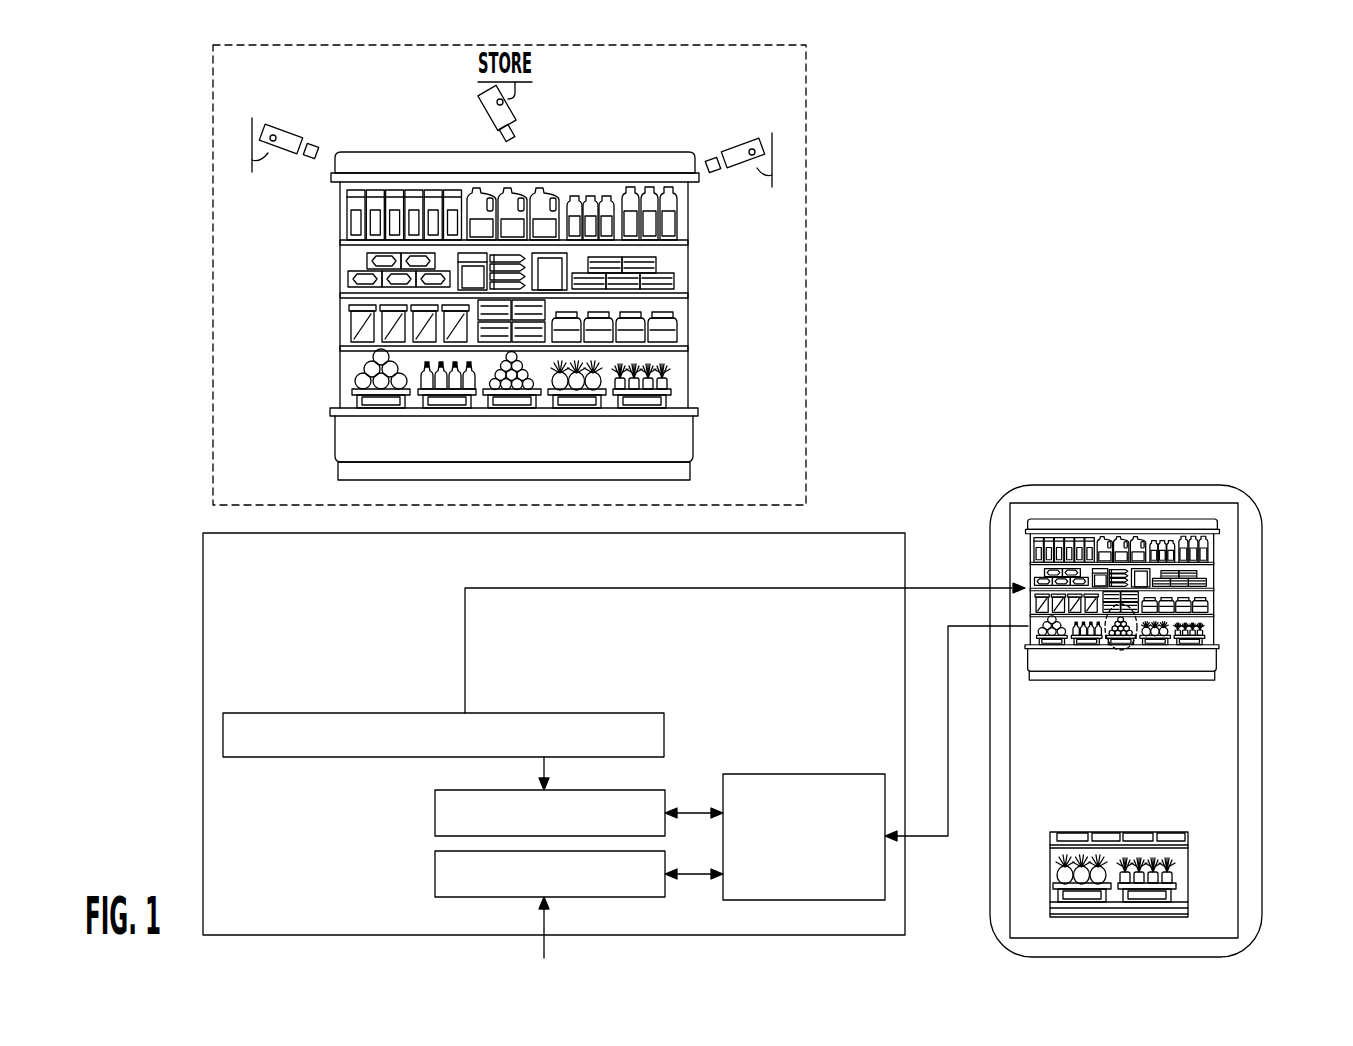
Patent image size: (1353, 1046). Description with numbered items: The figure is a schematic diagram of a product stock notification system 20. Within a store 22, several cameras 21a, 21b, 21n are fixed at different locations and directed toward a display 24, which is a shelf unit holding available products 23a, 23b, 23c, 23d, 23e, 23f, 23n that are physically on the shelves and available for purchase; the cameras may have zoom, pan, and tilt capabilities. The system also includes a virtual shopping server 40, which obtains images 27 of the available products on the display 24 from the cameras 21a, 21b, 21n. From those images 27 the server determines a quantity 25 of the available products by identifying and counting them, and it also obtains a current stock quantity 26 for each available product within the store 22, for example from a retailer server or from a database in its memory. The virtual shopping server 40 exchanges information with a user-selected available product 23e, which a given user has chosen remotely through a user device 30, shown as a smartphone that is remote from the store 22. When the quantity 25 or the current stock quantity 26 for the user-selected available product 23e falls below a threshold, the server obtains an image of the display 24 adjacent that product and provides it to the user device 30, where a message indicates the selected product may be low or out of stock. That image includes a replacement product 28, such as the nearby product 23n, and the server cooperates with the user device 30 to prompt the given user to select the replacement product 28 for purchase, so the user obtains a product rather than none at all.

The product stock notification system 20 is at (1032, 78).
The camera 21a is at (287, 131).
The camera 21b is at (490, 118).
The camera 21n is at (741, 140).
The store 22 is at (212, 192).
The available product 23a is at (608, 200).
The available product 23b is at (372, 263).
The available product 23c is at (364, 321).
The available product 23d is at (377, 403).
The user-selected available product 23e is at (503, 404).
The available product 23f is at (578, 404).
The available product 23n is at (668, 402).
The display 24 is at (695, 428).
The quantity of the available products 25 is at (435, 819).
The current stock quantity 26 is at (435, 880).
The images 27 is at (267, 713).
The replacement product 28 is at (1083, 898).
The user device 30 is at (1108, 476).
The virtual shopping server 40 is at (194, 578).